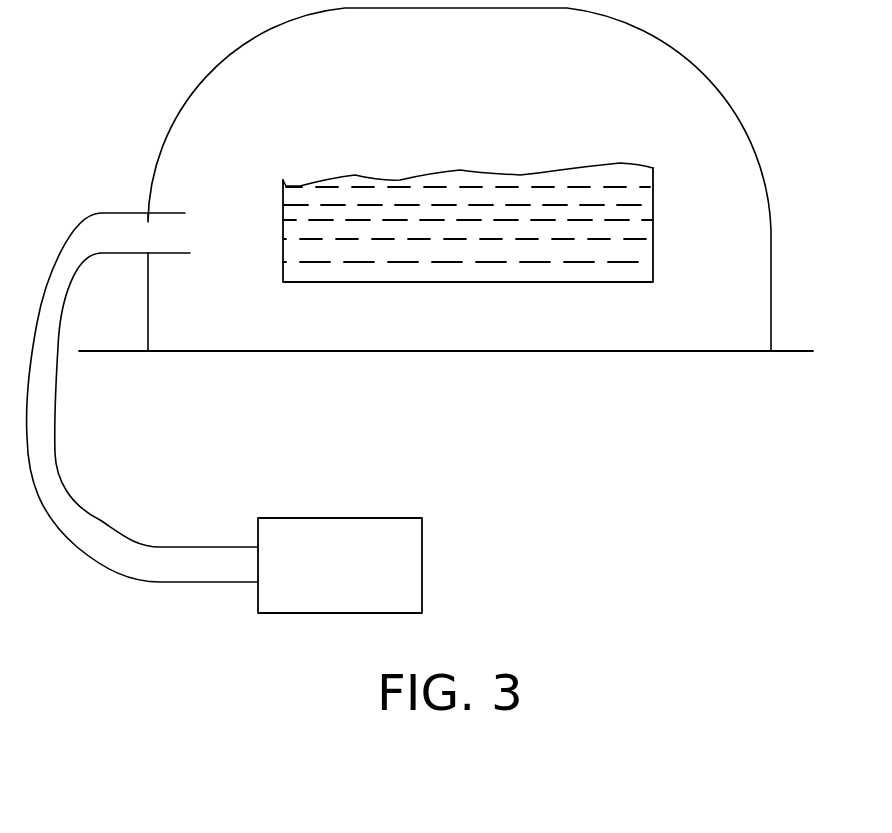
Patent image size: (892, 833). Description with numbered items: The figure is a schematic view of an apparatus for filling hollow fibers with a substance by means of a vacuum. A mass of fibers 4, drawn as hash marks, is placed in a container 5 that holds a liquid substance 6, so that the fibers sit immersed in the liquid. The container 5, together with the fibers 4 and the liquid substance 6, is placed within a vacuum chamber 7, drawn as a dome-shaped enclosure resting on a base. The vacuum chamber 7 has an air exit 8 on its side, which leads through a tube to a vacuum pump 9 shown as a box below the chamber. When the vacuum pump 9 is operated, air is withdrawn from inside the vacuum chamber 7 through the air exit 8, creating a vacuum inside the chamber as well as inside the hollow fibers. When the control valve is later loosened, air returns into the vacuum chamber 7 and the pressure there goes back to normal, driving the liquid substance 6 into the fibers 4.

The mass of fibers 4 is at (585, 252).
The container 5 is at (655, 246).
The liquid substance 6 is at (598, 178).
The vacuum chamber 7 is at (771, 220).
The air exit 8 is at (112, 227).
The vacuum pump 9 is at (341, 588).